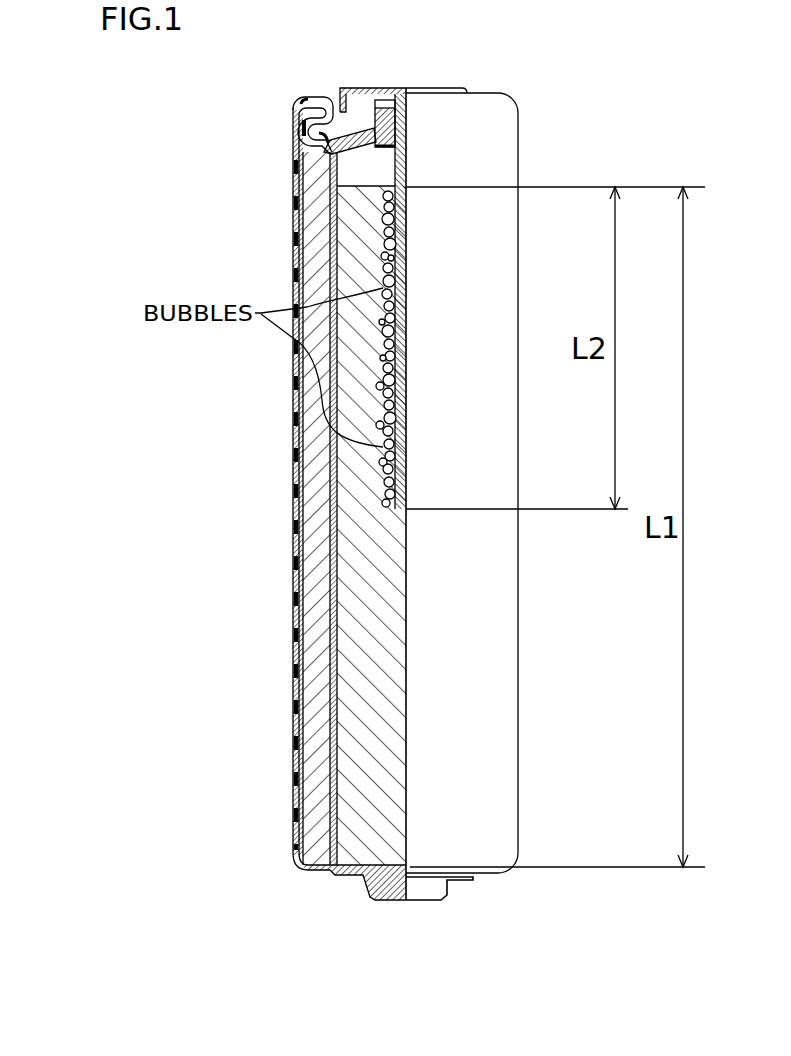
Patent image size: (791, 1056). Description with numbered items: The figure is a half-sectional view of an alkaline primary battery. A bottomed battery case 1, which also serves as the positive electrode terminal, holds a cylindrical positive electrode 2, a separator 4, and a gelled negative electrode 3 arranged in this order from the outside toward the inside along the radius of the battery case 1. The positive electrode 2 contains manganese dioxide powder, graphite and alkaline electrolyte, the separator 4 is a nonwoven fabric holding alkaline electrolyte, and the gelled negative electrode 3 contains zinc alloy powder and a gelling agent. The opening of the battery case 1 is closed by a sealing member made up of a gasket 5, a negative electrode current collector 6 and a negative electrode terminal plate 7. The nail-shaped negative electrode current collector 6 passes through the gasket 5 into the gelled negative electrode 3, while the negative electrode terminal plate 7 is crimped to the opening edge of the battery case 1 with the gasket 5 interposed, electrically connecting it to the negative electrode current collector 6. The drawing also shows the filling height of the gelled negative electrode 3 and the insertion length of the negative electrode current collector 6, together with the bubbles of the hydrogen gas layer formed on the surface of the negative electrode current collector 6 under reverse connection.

The battery case 1 is at (300, 603).
The positive electrode 2 is at (313, 762).
The gelled negative electrode 3 is at (345, 552).
The separator 4 is at (333, 675).
The gasket 5 is at (377, 138).
The negative electrode current collector 6 is at (407, 238).
The negative electrode terminal plate 7 is at (367, 88).